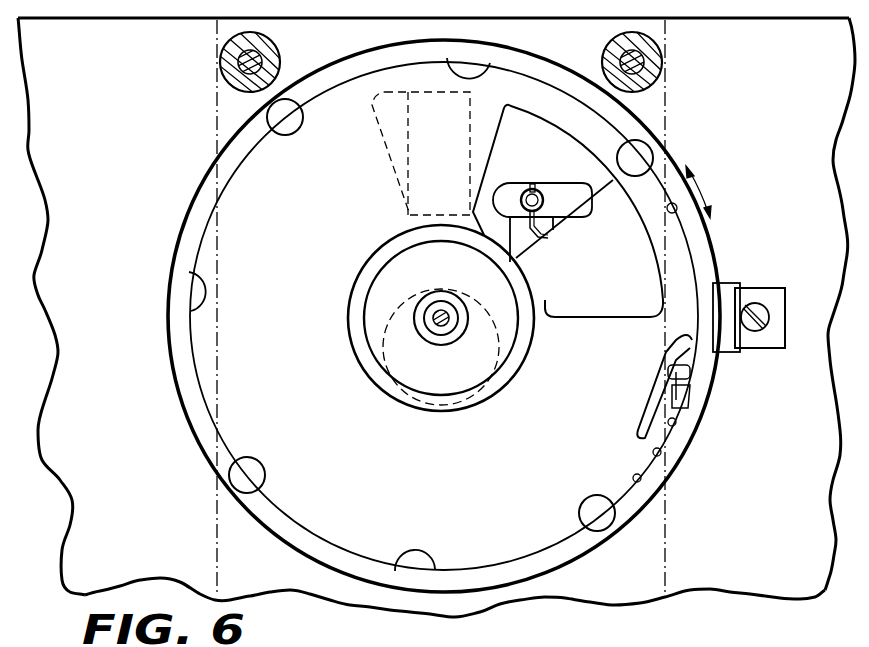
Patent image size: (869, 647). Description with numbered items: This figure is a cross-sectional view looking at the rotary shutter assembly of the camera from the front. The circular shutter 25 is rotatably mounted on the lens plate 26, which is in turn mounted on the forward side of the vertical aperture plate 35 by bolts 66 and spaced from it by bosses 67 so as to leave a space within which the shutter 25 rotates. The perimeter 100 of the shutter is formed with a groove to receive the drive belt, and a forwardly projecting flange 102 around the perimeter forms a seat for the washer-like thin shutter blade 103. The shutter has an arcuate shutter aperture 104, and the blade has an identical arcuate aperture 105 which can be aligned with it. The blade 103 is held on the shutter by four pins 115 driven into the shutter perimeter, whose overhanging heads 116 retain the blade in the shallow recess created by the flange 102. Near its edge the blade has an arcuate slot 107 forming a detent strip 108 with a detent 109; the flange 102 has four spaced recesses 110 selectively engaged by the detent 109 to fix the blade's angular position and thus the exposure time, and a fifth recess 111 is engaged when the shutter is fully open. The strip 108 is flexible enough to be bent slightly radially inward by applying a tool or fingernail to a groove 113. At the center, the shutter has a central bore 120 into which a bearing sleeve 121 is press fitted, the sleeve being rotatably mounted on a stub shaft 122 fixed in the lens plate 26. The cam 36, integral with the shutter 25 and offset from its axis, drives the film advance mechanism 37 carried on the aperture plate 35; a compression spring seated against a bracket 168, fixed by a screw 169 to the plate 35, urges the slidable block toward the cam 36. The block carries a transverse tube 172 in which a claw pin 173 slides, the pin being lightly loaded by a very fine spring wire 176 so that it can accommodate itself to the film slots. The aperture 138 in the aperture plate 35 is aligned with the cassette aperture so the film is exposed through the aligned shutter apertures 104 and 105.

The circular shutter 25 is at (630, 130).
The lens plate 26 is at (690, 87).
The aperture plate 35 is at (78, 118).
The cam 36 is at (503, 355).
The film advance mechanism 37 is at (550, 174).
The bolts 66 is at (243, 62).
The bosses 67 is at (231, 52).
The perimeter 100 is at (582, 42).
The flange 102 is at (690, 266).
The shutter blade 103 is at (449, 347).
The shutter aperture 104 is at (528, 92).
The arcuate aperture 105 is at (607, 313).
The arcuate slot 107 is at (650, 406).
The detent strip 108 is at (675, 410).
The detent 109 is at (690, 373).
The recesses 110 is at (700, 388).
The fifth recess 111 is at (680, 215).
The groove 113 is at (680, 386).
The pins 115 is at (494, 334).
The overhanging heads 116 is at (285, 130).
The central bore 120 is at (443, 300).
The bearing sleeve 121 is at (437, 326).
The stub shaft 122 is at (450, 312).
The aperture 138 is at (407, 115).
The bracket 168 is at (722, 302).
The screw 169 is at (766, 318).
The tube 172 is at (530, 188).
The claw pin 173 is at (544, 201).
The spring wire 176 is at (549, 236).